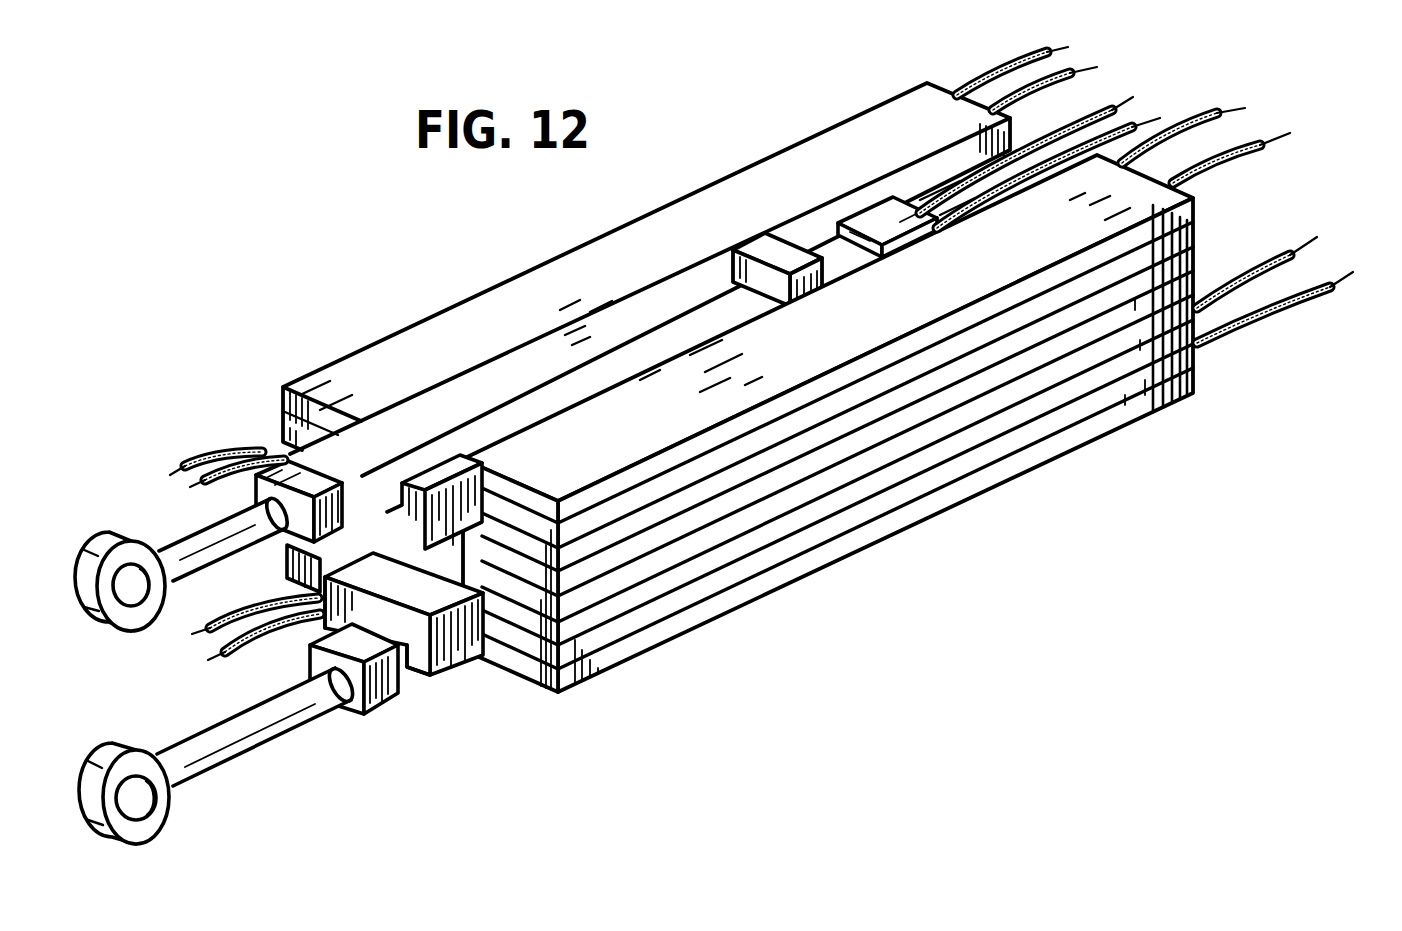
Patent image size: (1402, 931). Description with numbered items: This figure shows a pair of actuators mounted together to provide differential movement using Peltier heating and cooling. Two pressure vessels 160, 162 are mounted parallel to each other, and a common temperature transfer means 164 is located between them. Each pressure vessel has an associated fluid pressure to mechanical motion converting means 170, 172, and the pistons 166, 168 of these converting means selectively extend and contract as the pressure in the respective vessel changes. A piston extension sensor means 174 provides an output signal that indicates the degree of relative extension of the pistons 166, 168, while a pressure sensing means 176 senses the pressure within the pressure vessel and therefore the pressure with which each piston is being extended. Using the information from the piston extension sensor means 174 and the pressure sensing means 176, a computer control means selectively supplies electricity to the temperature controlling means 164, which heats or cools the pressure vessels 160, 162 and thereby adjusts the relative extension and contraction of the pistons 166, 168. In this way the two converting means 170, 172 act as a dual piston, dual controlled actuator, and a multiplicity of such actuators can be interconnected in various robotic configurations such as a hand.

The pressure vessel 160 is at (875, 423).
The pressure vessel 162 is at (1203, 371).
The temperature transfer means 164 is at (1197, 283).
The piston 166 is at (202, 543).
The piston 168 is at (227, 753).
The fluid pressure to mechanical motion converting means 170 is at (487, 385).
The fluid pressure to mechanical motion converting means 172 is at (390, 697).
The piston extension sensor means 174 is at (452, 640).
The pressure sensing means 176 is at (873, 223).